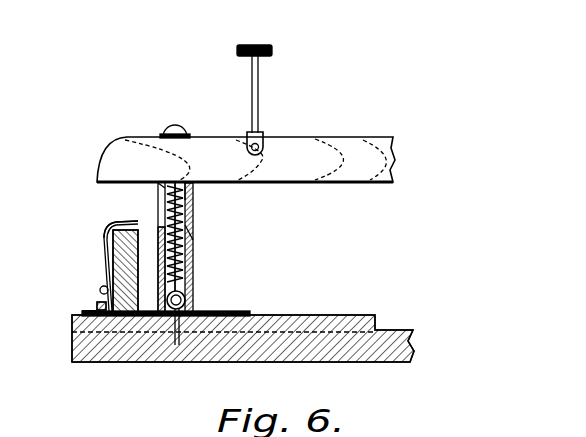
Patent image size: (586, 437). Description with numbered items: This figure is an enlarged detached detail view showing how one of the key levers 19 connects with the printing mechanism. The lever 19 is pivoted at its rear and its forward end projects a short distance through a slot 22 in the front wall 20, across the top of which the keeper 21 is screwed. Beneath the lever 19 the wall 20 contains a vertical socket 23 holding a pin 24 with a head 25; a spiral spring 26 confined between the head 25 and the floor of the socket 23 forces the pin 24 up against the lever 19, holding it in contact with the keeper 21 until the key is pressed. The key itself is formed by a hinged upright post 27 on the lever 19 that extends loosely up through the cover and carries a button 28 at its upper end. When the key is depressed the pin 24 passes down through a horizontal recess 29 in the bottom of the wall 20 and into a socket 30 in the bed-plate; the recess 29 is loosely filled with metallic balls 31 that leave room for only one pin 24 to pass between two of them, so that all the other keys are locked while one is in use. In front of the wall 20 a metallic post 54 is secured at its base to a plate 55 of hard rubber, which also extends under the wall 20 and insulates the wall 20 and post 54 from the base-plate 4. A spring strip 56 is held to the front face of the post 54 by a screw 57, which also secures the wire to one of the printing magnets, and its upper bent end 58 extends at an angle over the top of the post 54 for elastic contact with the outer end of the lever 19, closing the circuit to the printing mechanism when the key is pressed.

The base-plate 4 is at (356, 352).
The lever 19 is at (246, 159).
The wall 20 is at (196, 260).
The keeper 21 is at (169, 128).
The slot 22 is at (194, 193).
The vertical socket 23 is at (195, 233).
The pin 24 is at (177, 224).
The head 25 is at (158, 188).
The spiral spring 26 is at (183, 243).
The hinged upright post 27 is at (259, 96).
The button 28 is at (273, 49).
The horizontal recess 29 is at (193, 291).
The socket 30 is at (181, 340).
The metallic ball 31 is at (188, 301).
The metallic post 54 is at (141, 283).
The plate of hard rubber 55 is at (85, 312).
The spring strip 56 is at (104, 243).
The screw 57 is at (105, 288).
The upper bent end 58 is at (121, 222).